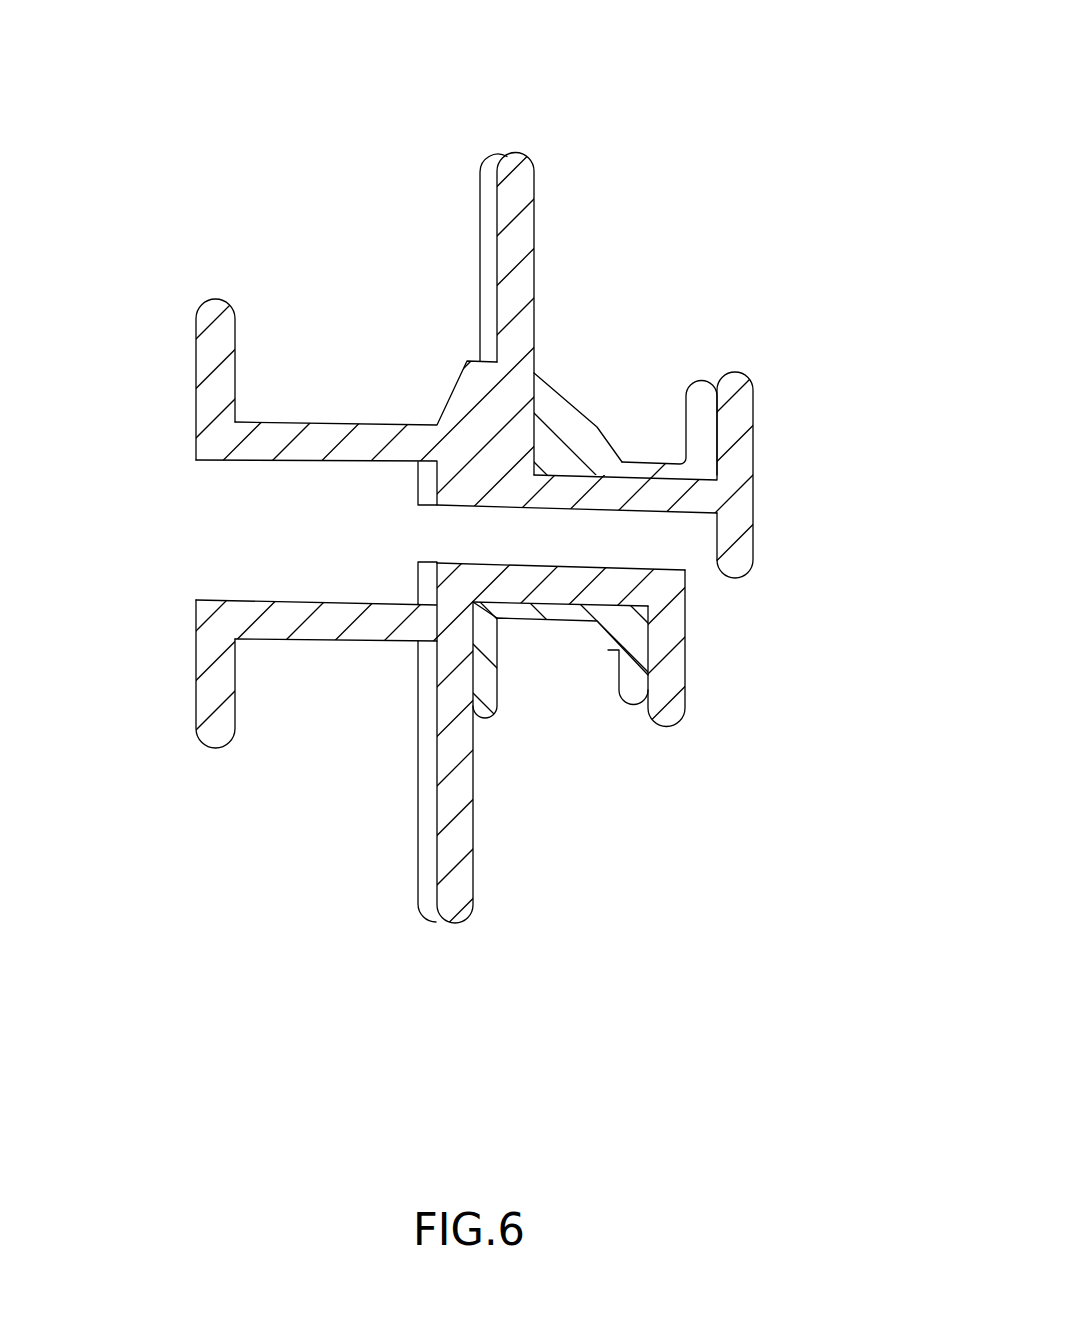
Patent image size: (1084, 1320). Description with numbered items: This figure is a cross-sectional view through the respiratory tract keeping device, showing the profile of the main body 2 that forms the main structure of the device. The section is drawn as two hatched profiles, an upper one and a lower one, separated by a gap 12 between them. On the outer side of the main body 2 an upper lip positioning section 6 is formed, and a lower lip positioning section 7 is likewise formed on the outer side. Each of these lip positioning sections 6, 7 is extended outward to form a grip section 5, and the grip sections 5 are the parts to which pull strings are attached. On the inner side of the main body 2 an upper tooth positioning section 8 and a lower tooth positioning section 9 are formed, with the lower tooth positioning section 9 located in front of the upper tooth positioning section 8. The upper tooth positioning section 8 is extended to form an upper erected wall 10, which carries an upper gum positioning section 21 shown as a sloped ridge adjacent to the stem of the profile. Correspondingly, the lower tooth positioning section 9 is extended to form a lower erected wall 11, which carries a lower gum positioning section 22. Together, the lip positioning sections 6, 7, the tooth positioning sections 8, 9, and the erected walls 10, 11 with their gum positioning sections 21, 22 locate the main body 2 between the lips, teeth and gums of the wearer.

The main body 2 is at (537, 183).
The grip section 5 is at (196, 387).
The upper lip positioning section 6 is at (330, 422).
The lower lip positioning section 7 is at (320, 641).
The upper tooth positioning section 8 is at (592, 343).
The lower tooth positioning section 9 is at (521, 762).
The upper erected wall 10 is at (753, 410).
The lower erected wall 11 is at (686, 655).
The gap 12 is at (678, 545).
The upper gum positioning section 21 is at (600, 423).
The lower gum positioning section 22 is at (498, 658).